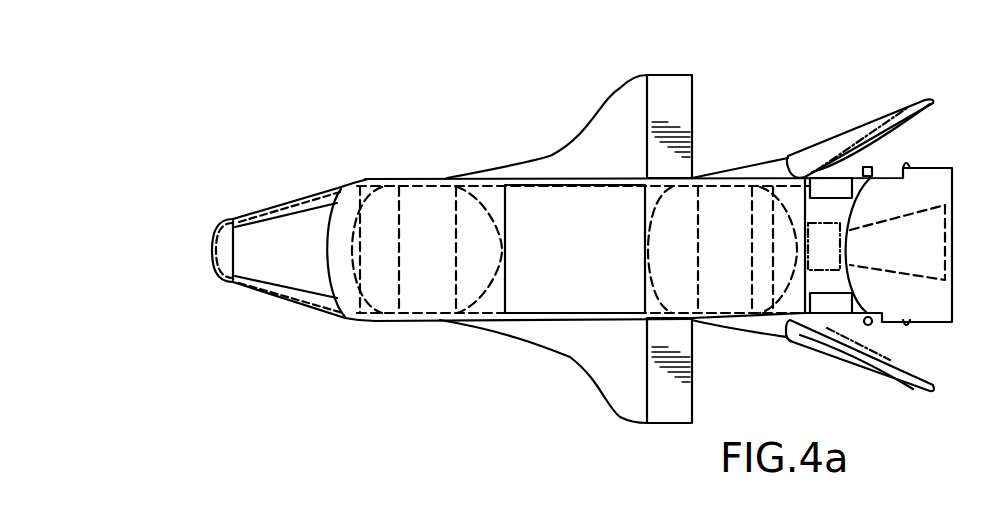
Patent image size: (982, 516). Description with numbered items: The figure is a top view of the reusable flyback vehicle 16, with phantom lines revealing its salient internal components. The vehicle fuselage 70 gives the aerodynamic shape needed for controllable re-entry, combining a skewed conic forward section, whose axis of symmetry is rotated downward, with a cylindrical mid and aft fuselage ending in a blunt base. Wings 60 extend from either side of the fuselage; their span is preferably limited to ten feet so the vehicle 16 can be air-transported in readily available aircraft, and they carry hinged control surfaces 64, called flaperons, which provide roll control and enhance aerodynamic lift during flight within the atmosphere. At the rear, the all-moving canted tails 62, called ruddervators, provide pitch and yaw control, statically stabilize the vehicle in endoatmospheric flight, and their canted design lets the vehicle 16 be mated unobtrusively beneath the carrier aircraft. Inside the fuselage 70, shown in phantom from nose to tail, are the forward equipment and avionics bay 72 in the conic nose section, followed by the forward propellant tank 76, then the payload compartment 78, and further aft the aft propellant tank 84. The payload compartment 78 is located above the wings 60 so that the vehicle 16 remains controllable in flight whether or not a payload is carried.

The REFLY vehicle 16 is at (494, 355).
The wings 60 is at (568, 142).
The canted tails 62 is at (842, 123).
The hinged control surfaces 64 is at (662, 425).
The vehicle fuselage 70 is at (487, 320).
The forward equipment and avionics bay 72 is at (270, 297).
The forward propellant tank 76 is at (478, 198).
The payload compartment 78 is at (648, 203).
The aft propellant tank 84 is at (793, 200).